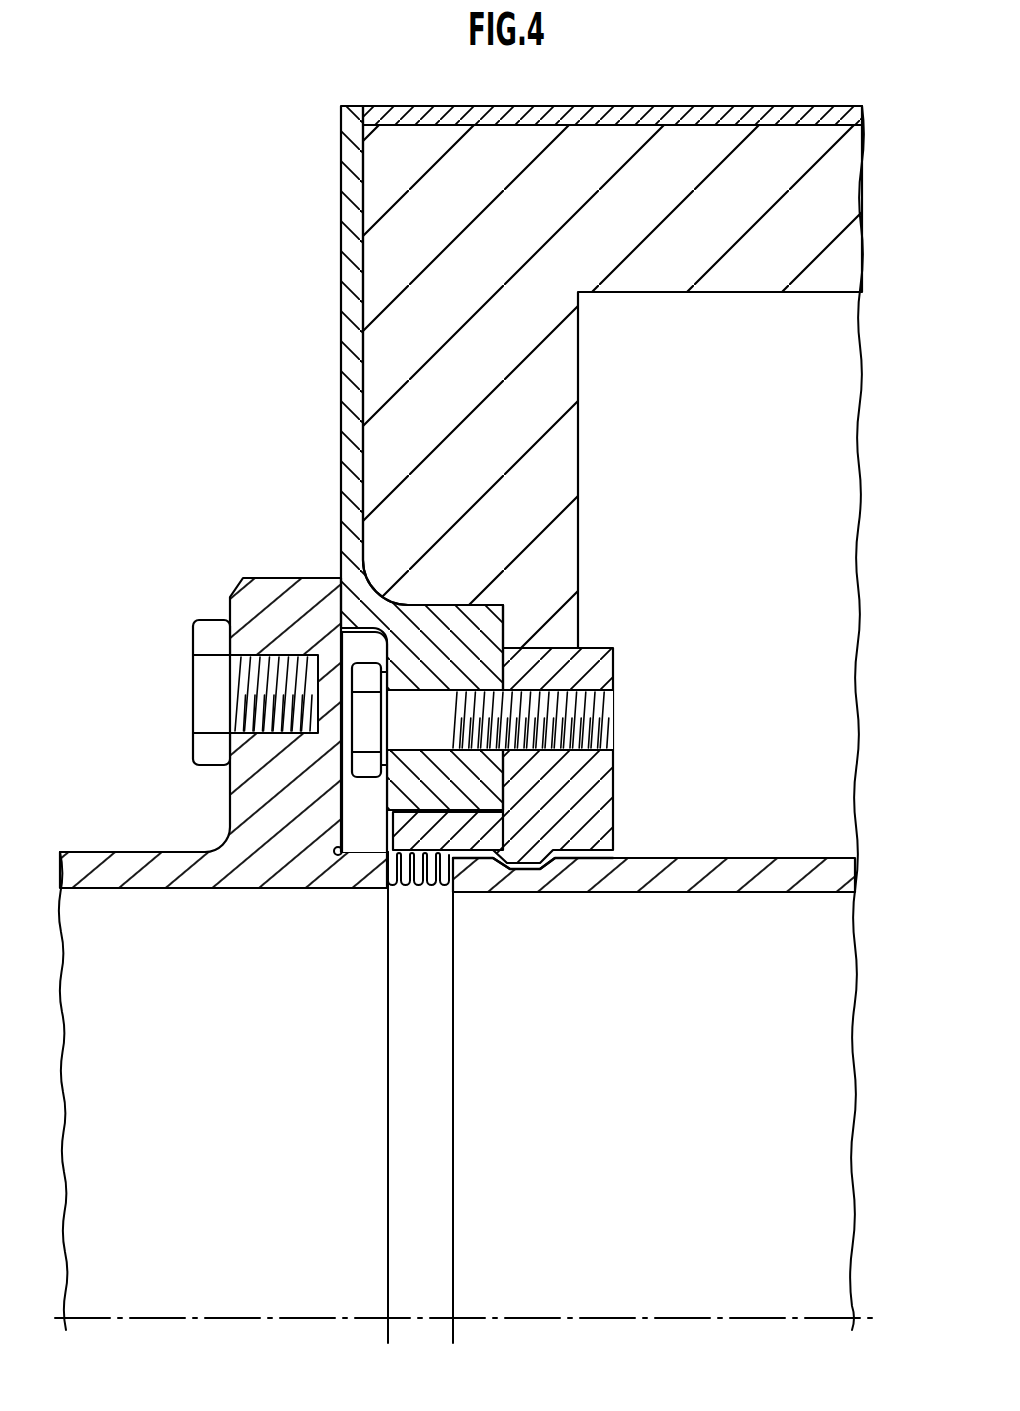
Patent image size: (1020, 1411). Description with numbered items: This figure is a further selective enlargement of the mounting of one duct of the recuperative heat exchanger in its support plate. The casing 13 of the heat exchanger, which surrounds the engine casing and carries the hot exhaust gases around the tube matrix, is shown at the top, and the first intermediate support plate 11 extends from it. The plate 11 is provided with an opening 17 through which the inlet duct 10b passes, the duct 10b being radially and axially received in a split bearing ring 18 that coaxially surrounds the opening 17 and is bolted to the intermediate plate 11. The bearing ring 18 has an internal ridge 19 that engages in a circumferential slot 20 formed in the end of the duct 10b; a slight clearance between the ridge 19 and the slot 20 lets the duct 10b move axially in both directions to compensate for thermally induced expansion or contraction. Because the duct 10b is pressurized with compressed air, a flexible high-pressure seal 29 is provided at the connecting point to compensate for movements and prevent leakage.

The casing 13 is at (640, 114).
The first intermediate support plate 11 is at (350, 599).
The duct 10b is at (768, 869).
The split bearing ring 18 is at (598, 776).
The internal ridge 19 is at (522, 846).
The circumferential slot 20 is at (524, 870).
The flexible high-pressure seal 29 is at (422, 887).
The opening 17 is at (476, 1168).